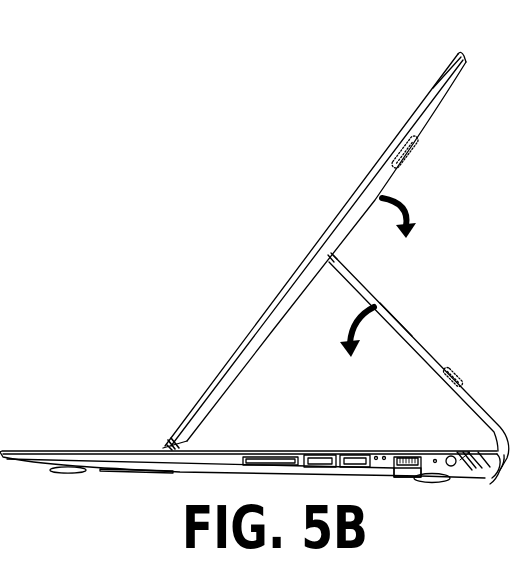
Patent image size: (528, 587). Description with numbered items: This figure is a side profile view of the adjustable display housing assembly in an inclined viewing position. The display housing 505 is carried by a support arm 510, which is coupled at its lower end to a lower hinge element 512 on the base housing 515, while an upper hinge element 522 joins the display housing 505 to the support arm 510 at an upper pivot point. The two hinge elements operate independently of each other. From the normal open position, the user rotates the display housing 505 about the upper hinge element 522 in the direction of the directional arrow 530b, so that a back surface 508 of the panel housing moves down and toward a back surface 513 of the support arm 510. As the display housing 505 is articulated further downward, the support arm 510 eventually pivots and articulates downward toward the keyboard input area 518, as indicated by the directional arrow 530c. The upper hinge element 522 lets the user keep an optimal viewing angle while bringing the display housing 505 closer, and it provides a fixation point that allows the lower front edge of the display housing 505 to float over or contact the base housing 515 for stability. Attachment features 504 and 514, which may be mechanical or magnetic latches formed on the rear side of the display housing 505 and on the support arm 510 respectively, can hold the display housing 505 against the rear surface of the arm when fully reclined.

The attachment feature 504 is at (410, 147).
The display housing 505 is at (341, 224).
The back surface of the display housing 508 is at (448, 107).
The support arm 510 is at (428, 358).
The lower hinge element 512 is at (500, 470).
The back surface of the support arm 513 is at (423, 302).
The attachment feature 514 is at (461, 387).
The base housing 515 is at (50, 450).
The keyboard input area 518 is at (341, 445).
The upper hinge element 522 is at (334, 257).
The directional arrow 530b is at (405, 214).
The directional arrow 530c is at (346, 331).